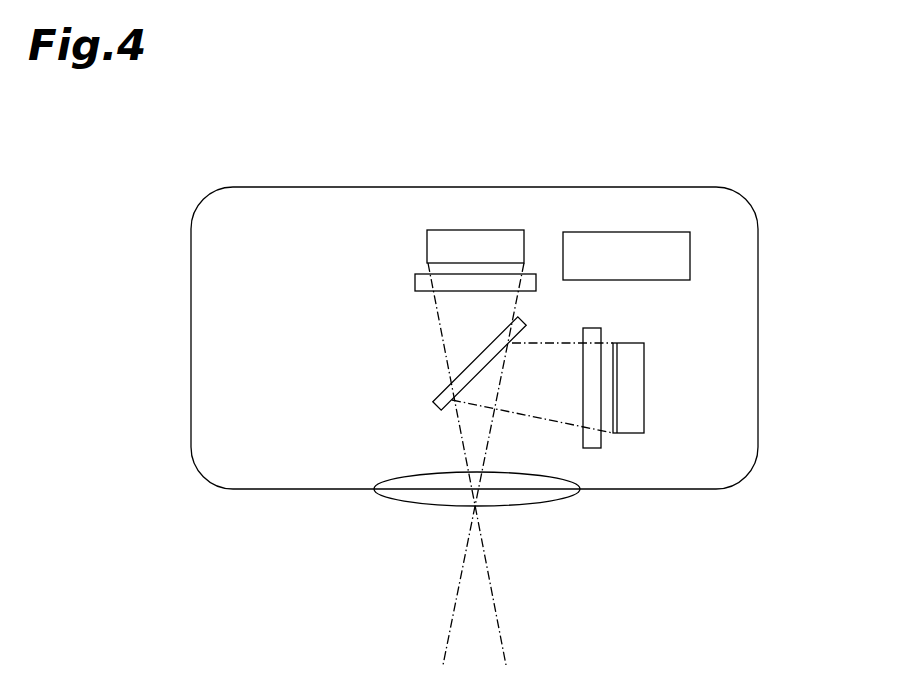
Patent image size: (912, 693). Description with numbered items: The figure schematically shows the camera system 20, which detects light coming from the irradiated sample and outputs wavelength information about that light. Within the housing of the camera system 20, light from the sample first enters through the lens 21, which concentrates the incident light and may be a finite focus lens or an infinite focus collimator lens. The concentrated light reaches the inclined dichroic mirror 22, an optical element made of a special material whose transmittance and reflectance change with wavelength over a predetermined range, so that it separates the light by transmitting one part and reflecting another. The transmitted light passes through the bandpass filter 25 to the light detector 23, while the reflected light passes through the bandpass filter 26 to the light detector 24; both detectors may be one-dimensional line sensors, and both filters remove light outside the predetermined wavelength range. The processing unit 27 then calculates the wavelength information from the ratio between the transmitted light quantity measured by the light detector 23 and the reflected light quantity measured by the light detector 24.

The camera system 20 is at (758, 270).
The lens 21 is at (420, 506).
The inclined dichroic mirror 22 is at (432, 402).
The light detector 23 is at (427, 246).
The light detector 24 is at (644, 380).
The bandpass filter 25 is at (415, 282).
The bandpass filter 26 is at (590, 448).
The processing unit 27 is at (643, 232).